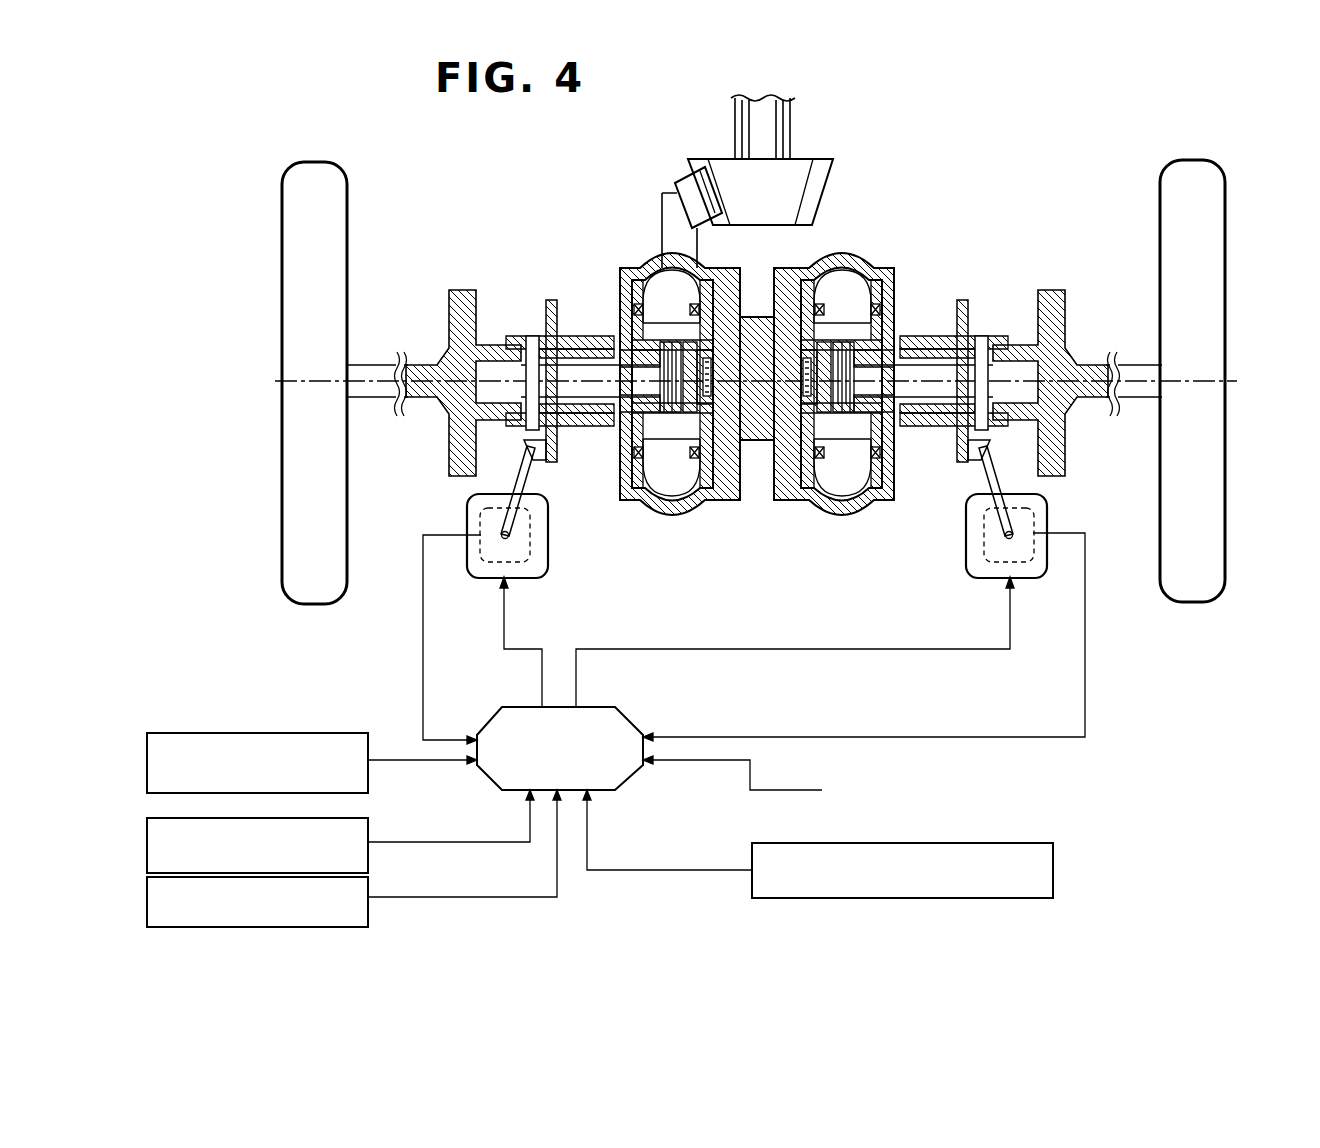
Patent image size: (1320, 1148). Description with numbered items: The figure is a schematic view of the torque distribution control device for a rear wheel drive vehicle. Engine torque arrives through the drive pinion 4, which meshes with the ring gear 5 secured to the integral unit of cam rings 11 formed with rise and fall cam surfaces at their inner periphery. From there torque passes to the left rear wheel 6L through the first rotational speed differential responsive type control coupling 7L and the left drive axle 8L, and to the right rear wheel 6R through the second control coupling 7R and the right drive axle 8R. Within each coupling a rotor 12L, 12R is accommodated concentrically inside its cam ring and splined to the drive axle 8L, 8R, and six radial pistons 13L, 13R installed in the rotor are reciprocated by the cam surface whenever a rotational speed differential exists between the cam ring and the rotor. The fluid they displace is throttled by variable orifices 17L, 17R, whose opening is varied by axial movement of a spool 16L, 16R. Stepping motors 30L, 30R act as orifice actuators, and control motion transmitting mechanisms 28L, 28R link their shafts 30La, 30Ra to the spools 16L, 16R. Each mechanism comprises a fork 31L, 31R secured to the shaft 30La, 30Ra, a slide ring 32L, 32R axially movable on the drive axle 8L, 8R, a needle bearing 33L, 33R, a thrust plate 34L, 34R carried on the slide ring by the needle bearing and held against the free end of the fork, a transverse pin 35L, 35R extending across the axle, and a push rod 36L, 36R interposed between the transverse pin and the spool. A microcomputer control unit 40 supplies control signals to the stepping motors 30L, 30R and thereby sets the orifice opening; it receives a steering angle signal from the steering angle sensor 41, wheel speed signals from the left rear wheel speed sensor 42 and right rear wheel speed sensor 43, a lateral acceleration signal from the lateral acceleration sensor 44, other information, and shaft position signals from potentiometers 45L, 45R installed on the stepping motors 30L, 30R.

The drive pinion 4 is at (797, 195).
The ring gear 5 is at (676, 184).
The left rear wheel 6L is at (347, 183).
The right rear wheel 6R is at (1159, 185).
The first rotational speed differential responsive type control coupling 7L is at (678, 512).
The second rotational speed differential responsive type control coupling 7R is at (840, 512).
The left drive axle 8L is at (375, 399).
The right drive axle 8R is at (1124, 398).
The cam rings 11 is at (660, 262).
The rotor 12L is at (642, 332).
The rotor 12R is at (890, 478).
The radial pistons 13L is at (652, 282).
The radial pistons 13R is at (847, 505).
The spool 16L is at (624, 347).
The spool 16R is at (897, 386).
The variable orifices 17L is at (634, 352).
The variable orifices 17R is at (891, 449).
The control motion transmitting mechanism 28L is at (466, 489).
The control motion transmitting mechanism 28R is at (1058, 515).
The stepping motor 30L is at (541, 571).
The stepping motor 30R is at (967, 566).
The shaft 30La is at (510, 537).
The shaft 30Ra is at (1000, 539).
The fork 31L is at (522, 482).
The fork 31R is at (995, 479).
The slide ring 32L is at (468, 272).
The slide ring 32R is at (990, 286).
The needle bearing 33L is at (548, 338).
The needle bearing 33R is at (961, 300).
The thrust plate 34L is at (541, 329).
The thrust plate 34R is at (943, 334).
The transverse pin 35L is at (526, 366).
The transverse pin 35R is at (985, 389).
The push rod 36L is at (585, 414).
The push rod 36R is at (918, 335).
The control unit 40 is at (626, 716).
The steering angle sensor 41 is at (325, 733).
The left rear wheel speed sensor 42 is at (370, 824).
The right rear wheel speed sensor 43 is at (372, 889).
The lateral acceleration sensor 44 is at (1010, 843).
The potentiometer 45L is at (482, 577).
The potentiometer 45R is at (1033, 580).